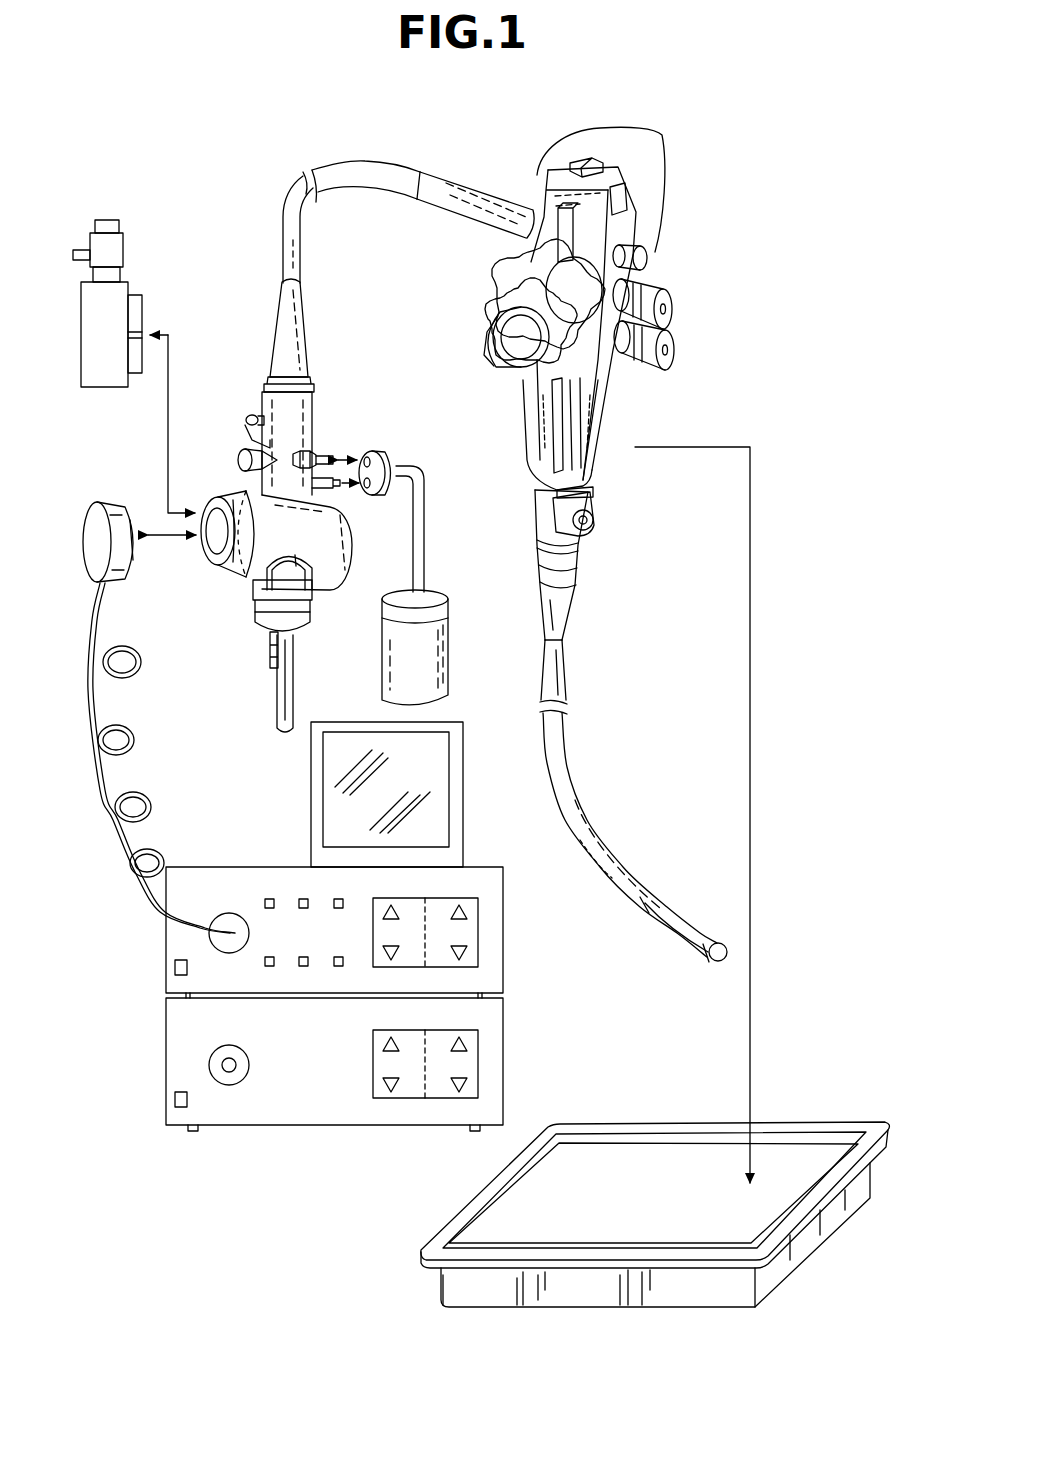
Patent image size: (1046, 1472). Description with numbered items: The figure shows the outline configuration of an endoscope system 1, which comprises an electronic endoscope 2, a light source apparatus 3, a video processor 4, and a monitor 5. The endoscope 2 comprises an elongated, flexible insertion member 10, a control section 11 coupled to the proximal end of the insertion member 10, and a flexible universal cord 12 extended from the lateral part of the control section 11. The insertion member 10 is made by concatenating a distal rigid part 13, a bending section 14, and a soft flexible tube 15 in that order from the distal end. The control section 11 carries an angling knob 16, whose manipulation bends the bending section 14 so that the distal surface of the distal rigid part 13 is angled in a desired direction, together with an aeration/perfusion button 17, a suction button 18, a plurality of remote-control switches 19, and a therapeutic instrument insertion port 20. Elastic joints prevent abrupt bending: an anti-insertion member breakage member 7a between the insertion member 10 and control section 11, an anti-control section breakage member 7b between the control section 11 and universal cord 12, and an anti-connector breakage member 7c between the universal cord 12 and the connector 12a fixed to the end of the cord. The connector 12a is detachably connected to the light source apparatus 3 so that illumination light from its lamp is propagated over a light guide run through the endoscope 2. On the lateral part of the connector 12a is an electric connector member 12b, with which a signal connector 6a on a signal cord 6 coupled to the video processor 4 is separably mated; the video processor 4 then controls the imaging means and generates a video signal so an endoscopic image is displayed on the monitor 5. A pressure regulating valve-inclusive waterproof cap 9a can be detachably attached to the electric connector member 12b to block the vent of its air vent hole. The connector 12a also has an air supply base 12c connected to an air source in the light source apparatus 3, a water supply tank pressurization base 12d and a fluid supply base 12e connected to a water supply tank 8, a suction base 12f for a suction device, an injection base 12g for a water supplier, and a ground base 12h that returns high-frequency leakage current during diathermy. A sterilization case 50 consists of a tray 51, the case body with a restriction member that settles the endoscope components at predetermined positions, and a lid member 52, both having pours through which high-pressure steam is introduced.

The endoscope system 1 is at (672, 252).
The electronic endoscope 2 is at (627, 393).
The light source apparatus 3 is at (166, 1067).
The video processor 4 is at (166, 957).
The monitor 5 is at (464, 813).
The signal cord 6 is at (138, 738).
The signal connector 6a is at (120, 502).
The anti-insertion member breakage member 7a is at (568, 608).
The anti-control section breakage member 7b is at (458, 216).
The anti-connector breakage member 7c is at (272, 366).
The water supply tank 8 is at (390, 672).
The pressure regulating valve-inclusive waterproof cap 9a is at (120, 290).
The insertion member 10 is at (597, 798).
The control section 11 is at (595, 420).
The universal cord 12 is at (292, 203).
The connector 12a is at (320, 580).
The electric connector member 12b is at (216, 560).
The air supply base 12c is at (268, 655).
The water supply tank pressurization base 12d is at (327, 455).
The fluid supply base 12e is at (340, 485).
The suction base 12f is at (240, 464).
The injection base 12g is at (250, 413).
The ground base 12h is at (323, 455).
The distal rigid part 13 is at (702, 950).
The bending section 14 is at (662, 921).
The flexible tube 15 is at (596, 862).
The angling knob 16 is at (482, 295).
The aeration/perfusion button 17 is at (670, 350).
The suction button 18 is at (668, 308).
The remote-control switches 19 is at (622, 200).
The therapeutic instrument insertion port 20 is at (594, 521).
The sterilization case 50 is at (590, 1118).
The tray 51 is at (797, 1253).
The lid member 52 is at (637, 1160).